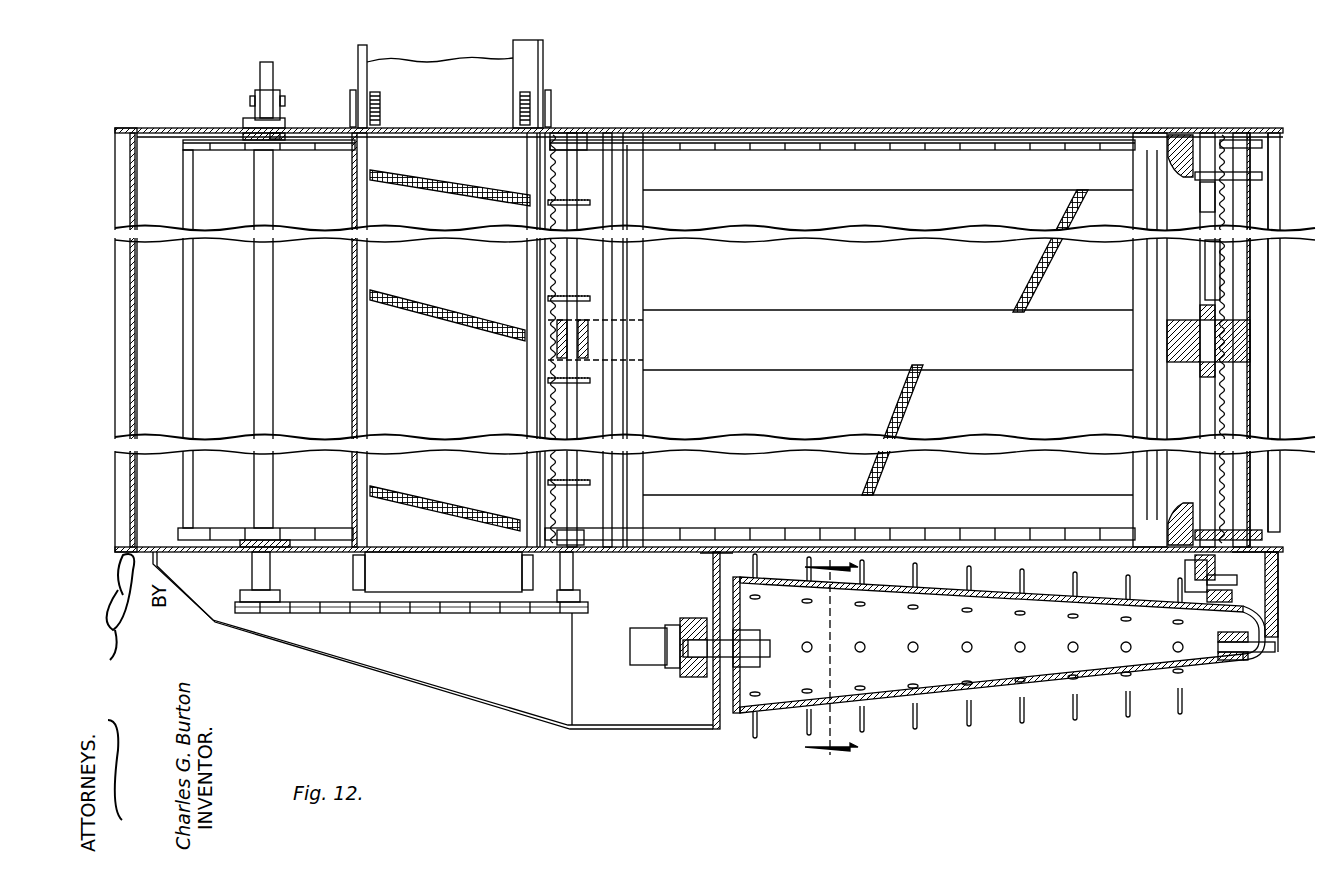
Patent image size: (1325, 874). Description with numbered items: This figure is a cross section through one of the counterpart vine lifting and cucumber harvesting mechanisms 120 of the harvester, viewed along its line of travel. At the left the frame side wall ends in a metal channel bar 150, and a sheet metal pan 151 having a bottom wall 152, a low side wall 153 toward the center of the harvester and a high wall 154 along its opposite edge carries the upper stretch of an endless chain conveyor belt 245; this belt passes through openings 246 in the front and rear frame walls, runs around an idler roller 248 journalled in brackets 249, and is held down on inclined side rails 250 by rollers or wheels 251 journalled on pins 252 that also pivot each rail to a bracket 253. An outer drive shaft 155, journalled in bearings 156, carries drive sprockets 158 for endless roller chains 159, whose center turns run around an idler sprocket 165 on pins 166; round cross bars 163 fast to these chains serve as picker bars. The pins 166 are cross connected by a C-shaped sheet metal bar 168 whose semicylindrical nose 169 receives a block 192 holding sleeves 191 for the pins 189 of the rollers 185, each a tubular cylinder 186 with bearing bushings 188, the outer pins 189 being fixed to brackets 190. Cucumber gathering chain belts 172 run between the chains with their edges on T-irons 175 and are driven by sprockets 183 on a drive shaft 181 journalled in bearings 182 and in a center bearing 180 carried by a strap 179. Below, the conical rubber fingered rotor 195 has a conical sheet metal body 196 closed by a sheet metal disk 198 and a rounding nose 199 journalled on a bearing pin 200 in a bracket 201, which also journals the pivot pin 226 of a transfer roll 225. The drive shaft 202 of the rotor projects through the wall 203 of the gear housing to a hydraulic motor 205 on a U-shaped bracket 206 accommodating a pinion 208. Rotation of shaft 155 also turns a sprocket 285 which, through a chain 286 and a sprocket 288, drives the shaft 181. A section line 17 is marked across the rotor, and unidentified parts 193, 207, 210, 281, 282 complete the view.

The section line 17- 17 is at (831, 669).
The vine lifting and cucumber harvesting mechanism 120 is at (1021, 99).
The metal channel bar 150 is at (118, 118).
The sheet metal pan 151 is at (343, 300).
The bottom wall 152 is at (367, 364).
The low side wall 153 is at (537, 416).
The high wall 154 is at (352, 333).
The outer drive shaft 155 is at (273, 371).
The bearings 156 is at (288, 123).
The drive sprockets 158 is at (323, 152).
The endless roller chains 159 is at (849, 152).
The round cross bars 163 is at (193, 282).
The idler sprocket 165 is at (1283, 134).
The pins 166 is at (1236, 130).
The C-shaped sheet metal bar 168 is at (1260, 405).
The rounding semicylindrical nose 169 is at (1250, 290).
The cucumber gathering chain belts 172 is at (942, 300).
The T-irons 175 is at (548, 272).
The strap 179 is at (597, 352).
The center bearing 180 is at (588, 333).
The drive shaft 181 is at (577, 406).
The bearings 182 is at (557, 138).
The drive sprockets 183 is at (590, 205).
The roller 185 is at (1190, 273).
The tubular cylinder 186 is at (1197, 427).
The bearing bushing 188 is at (1215, 193).
The pin 189 is at (1210, 385).
The brackets 190 is at (1178, 140).
The sleeves 191 is at (912, 128).
The block 192 is at (808, 122).
The column 193 is at (1133, 177).
The conical rubber fingered rotor 195 is at (1109, 723).
The conical sheet metal body 196 is at (1012, 717).
The sheet metal disk 198 is at (742, 680).
The rounding nose 199 is at (135, 358).
The coaxial bearing pin 200 is at (1253, 652).
The bracket 201 is at (1253, 620).
The drive shaft 202 is at (770, 648).
The wall 203 is at (713, 593).
The hydraulic motor 205 is at (638, 662).
The U-shaped bracket 206 is at (680, 670).
The sloping bottom 207 is at (537, 720).
The pinion 208 is at (693, 680).
The holes 210 is at (948, 722).
The transfer roll 225 is at (1185, 570).
The pivot pin 226 is at (1232, 585).
The endless chain conveyor belt 245 is at (476, 62).
The openings 246 is at (358, 137).
The idler roller 248 is at (366, 575).
The brackets 249 is at (353, 589).
The inclined side rails 250 is at (372, 52).
The rollers or wheels 251 is at (390, 90).
The pins 252 is at (355, 106).
The bracket 253 is at (352, 90).
The lever 281 is at (262, 68).
The pivot bracket 282 is at (250, 98).
The sprocket 285 is at (250, 588).
The chain 286 is at (330, 612).
The sprocket 288 is at (582, 594).